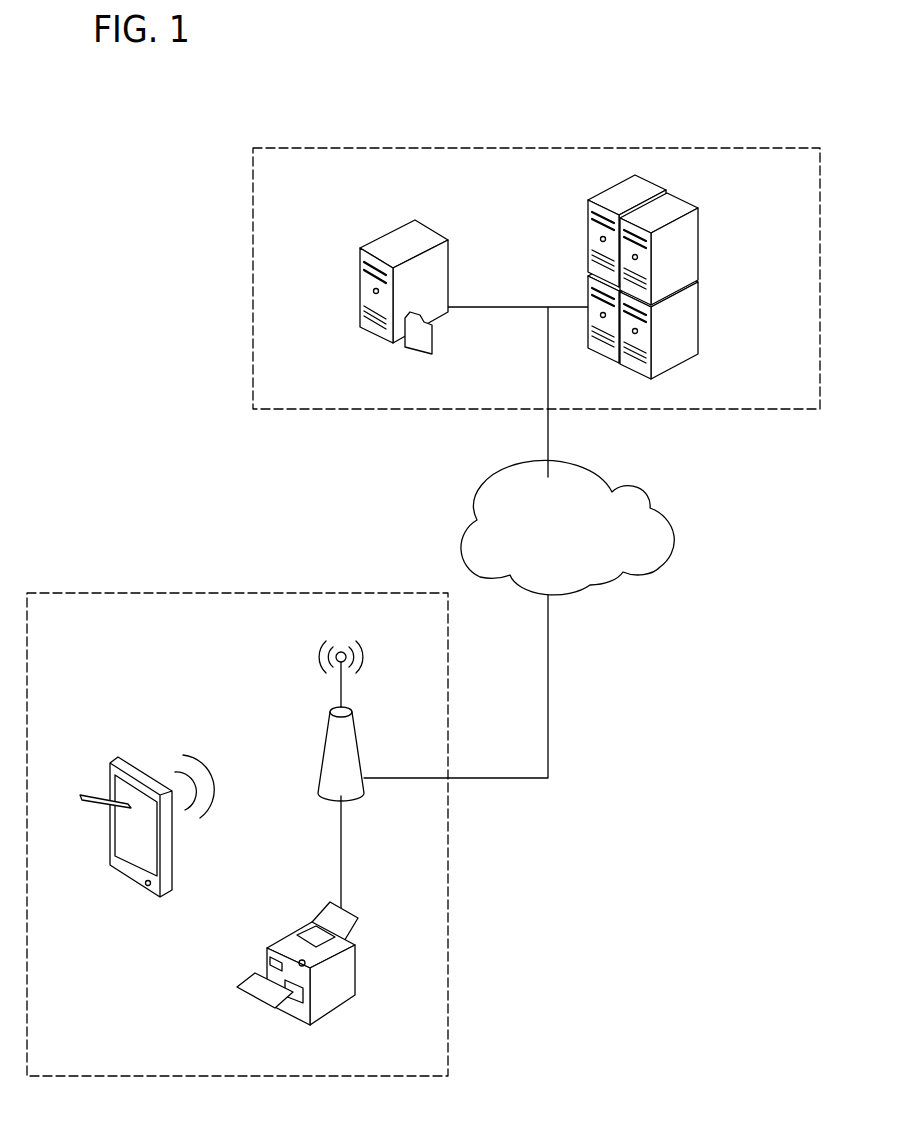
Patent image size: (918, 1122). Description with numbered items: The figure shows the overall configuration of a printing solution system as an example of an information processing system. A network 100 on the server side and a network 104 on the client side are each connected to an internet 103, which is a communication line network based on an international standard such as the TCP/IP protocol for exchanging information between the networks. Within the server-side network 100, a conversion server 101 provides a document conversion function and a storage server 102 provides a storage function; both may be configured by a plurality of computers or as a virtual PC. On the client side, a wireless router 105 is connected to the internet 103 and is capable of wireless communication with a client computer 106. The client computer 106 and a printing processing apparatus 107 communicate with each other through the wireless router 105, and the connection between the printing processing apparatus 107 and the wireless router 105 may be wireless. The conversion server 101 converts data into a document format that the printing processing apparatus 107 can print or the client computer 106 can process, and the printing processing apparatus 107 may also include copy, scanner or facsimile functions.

The network of a server side 100 is at (740, 148).
The conversion server 101 is at (448, 270).
The storage server 102 is at (700, 300).
The internet 103 is at (652, 510).
The network of a client side 104 is at (280, 593).
The wireless router 105 is at (358, 735).
The client computer 106 is at (173, 872).
The printing processing apparatus 107 is at (355, 968).